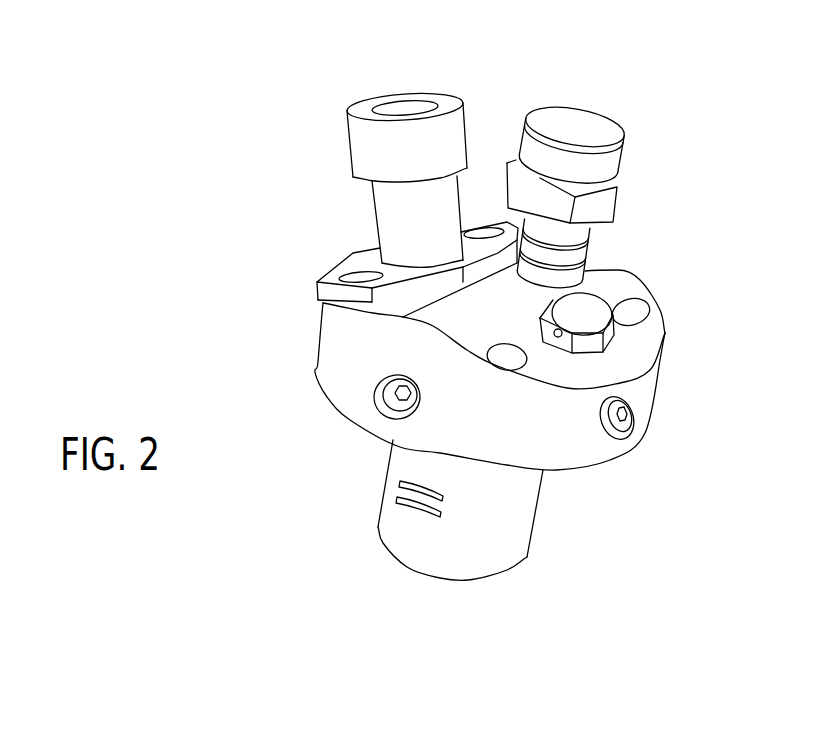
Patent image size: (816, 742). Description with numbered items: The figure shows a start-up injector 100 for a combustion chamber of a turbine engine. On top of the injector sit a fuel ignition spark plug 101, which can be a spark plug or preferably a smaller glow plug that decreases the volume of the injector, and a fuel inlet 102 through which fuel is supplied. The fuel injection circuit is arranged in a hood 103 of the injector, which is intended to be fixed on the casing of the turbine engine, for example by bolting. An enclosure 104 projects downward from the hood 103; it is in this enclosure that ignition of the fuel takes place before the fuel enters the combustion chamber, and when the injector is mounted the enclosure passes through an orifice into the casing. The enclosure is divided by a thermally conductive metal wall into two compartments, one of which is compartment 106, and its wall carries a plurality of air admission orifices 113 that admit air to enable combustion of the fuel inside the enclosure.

The start-up injector 100 is at (240, 225).
The fuel ignition spark plug 101 is at (377, 152).
The fuel inlet 102 is at (600, 163).
The hood 103 is at (620, 282).
The enclosure 104 is at (505, 522).
The compartment 106 is at (422, 553).
The air admission orifices 113 is at (400, 484).